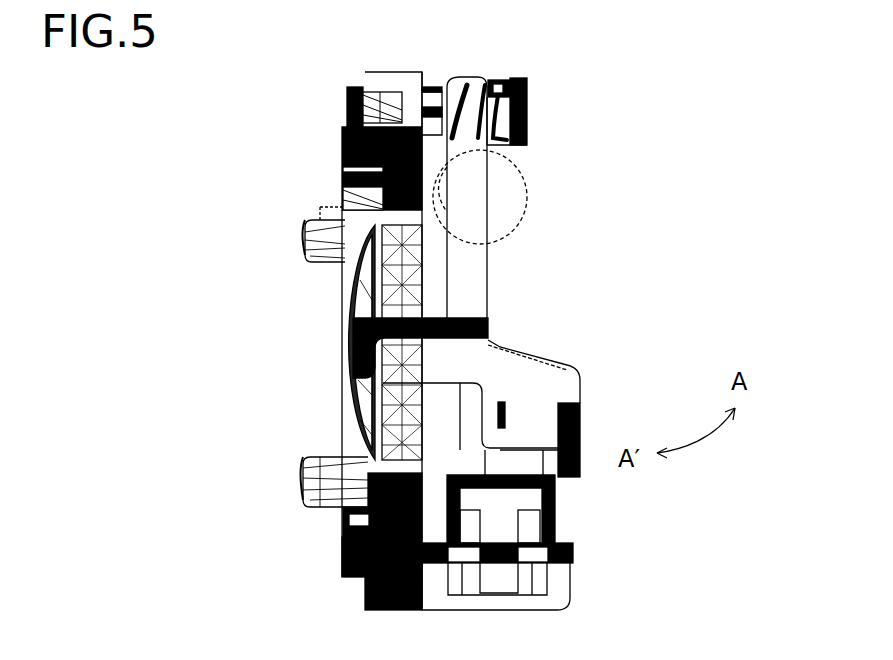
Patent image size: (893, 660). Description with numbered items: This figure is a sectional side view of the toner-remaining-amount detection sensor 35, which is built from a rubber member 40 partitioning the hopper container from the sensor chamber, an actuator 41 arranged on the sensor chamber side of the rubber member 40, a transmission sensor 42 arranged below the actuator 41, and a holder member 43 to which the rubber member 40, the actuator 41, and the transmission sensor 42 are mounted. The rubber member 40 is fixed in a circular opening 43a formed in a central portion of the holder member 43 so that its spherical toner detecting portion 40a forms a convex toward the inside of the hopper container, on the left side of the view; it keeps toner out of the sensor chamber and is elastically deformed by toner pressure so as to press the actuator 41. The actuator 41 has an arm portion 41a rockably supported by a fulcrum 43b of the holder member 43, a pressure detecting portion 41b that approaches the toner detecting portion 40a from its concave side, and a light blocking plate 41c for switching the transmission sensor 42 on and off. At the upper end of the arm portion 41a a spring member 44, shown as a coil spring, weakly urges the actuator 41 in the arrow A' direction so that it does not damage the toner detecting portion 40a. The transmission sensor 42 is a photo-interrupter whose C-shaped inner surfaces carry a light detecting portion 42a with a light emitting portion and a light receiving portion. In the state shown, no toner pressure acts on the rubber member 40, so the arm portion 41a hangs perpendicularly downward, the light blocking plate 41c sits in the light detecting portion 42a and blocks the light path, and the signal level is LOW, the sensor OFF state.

The toner-remaining-amount detection sensor 35 is at (663, 170).
The rubber member 40 is at (276, 342).
The toner detecting portion 40a is at (345, 336).
The actuator 41 is at (453, 277).
The arm portion 41a is at (472, 265).
The pressure detecting portion 41b is at (400, 372).
The light blocking plate 41c is at (511, 325).
The transmission sensor 42 is at (550, 493).
The light detecting portion 42a is at (342, 442).
The holder member 43 is at (340, 548).
The circular opening 43a is at (337, 242).
The fulcrum 43b is at (490, 187).
The spring member 44 is at (527, 95).